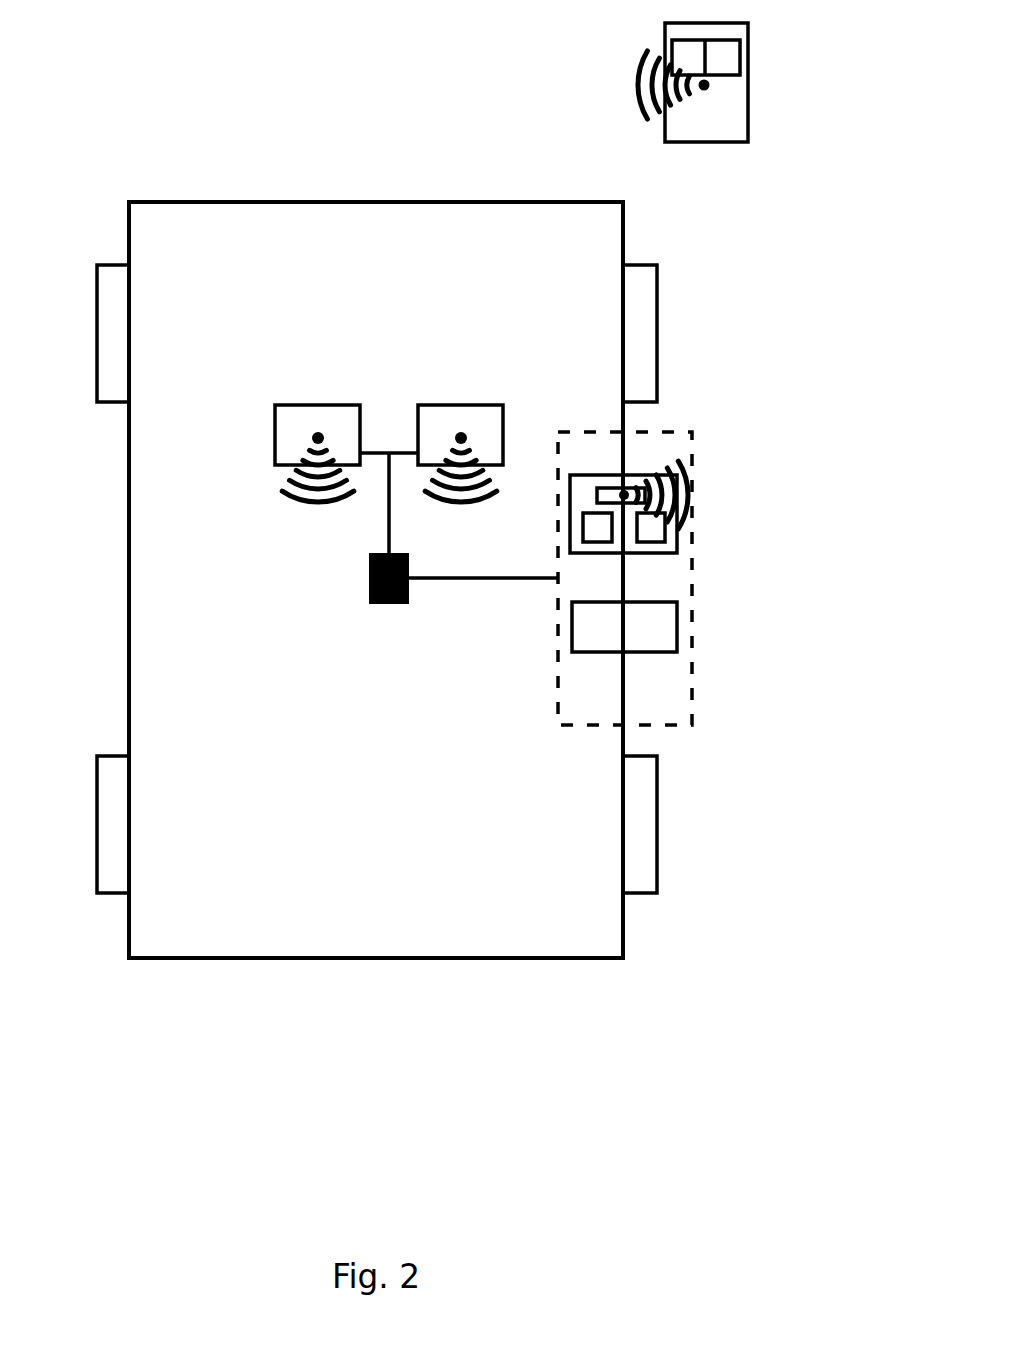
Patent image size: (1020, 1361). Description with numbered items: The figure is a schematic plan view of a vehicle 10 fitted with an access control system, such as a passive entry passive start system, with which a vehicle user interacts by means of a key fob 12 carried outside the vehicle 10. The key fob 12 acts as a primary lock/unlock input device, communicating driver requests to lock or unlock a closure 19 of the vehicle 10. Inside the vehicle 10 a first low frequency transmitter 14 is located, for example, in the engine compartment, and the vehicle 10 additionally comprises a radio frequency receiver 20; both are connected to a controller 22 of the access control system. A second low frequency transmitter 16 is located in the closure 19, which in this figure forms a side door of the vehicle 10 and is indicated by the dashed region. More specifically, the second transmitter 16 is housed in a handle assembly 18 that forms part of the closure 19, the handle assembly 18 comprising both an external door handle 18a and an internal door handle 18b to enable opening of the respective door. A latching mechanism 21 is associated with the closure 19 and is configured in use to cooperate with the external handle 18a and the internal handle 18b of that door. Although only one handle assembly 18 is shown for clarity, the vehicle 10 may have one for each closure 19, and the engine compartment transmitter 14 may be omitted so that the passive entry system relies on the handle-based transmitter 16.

The vehicle 10 is at (177, 1010).
The key fob 12 is at (704, 133).
The first low frequency (LF) transmitter 14 is at (460, 405).
The second LF transmitter 16 is at (597, 493).
The handle assembly 18 is at (585, 475).
The external door handle 18a is at (650, 553).
The internal door handle 18b is at (583, 528).
The closure 19 is at (692, 437).
The radio frequency (RF) receiver 20 is at (320, 405).
The latching mechanism 21 is at (630, 653).
The controller 22 is at (389, 605).